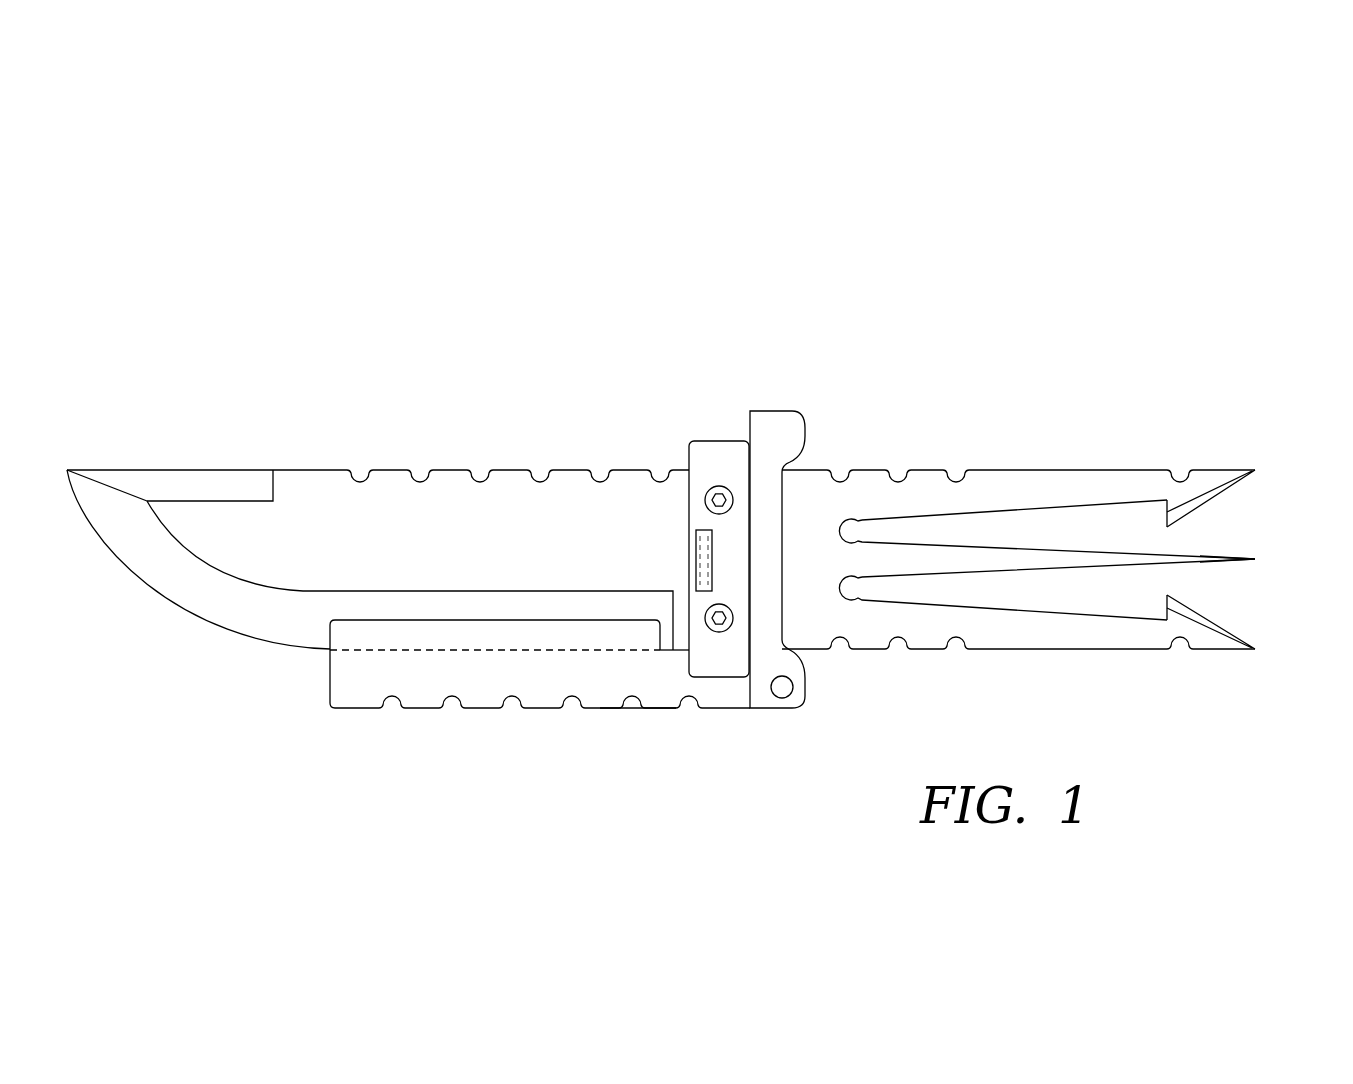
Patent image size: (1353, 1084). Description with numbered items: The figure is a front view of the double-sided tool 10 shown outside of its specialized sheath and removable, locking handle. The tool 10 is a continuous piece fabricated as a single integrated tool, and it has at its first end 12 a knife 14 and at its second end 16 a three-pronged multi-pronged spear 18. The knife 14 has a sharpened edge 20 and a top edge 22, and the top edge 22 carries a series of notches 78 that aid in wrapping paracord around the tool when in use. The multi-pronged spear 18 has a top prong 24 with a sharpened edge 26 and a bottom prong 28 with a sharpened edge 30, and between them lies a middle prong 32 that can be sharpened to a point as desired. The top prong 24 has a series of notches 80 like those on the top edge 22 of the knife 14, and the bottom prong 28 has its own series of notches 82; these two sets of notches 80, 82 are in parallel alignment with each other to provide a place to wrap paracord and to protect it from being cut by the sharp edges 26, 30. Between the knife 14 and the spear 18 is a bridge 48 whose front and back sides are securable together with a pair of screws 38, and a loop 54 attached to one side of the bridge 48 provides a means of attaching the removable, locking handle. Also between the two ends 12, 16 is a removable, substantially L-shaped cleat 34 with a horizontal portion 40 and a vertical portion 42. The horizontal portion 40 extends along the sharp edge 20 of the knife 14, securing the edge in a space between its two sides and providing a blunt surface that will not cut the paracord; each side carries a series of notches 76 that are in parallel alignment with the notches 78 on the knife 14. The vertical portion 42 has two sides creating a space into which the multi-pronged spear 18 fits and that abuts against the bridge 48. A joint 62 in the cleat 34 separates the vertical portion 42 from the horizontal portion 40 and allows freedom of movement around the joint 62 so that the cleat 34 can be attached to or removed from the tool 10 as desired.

The double-sided tool 10 is at (262, 325).
The first end 12 is at (70, 457).
The knife 14 is at (352, 543).
The second end 16 is at (1238, 452).
The multi-pronged spear 18 is at (796, 570).
The sharpened edge 20 is at (203, 617).
The top edge 22 is at (232, 480).
The top prong 24 is at (1055, 484).
The sharpened edge 26 is at (1225, 477).
The bottom prong 28 is at (1048, 650).
The sharpened edge 30 is at (1225, 625).
The middle prong 32 is at (1252, 550).
The cleat 34 is at (653, 705).
The screws 38 is at (733, 499).
The horizontal portion 40 is at (540, 673).
The vertical portion 42 is at (773, 422).
The bridge 48 is at (716, 455).
The loop 54 is at (696, 563).
The joint 62 is at (779, 690).
The notches 76 is at (455, 703).
The notches 78 is at (480, 480).
The notches 80 is at (898, 483).
The notches 82 is at (896, 650).